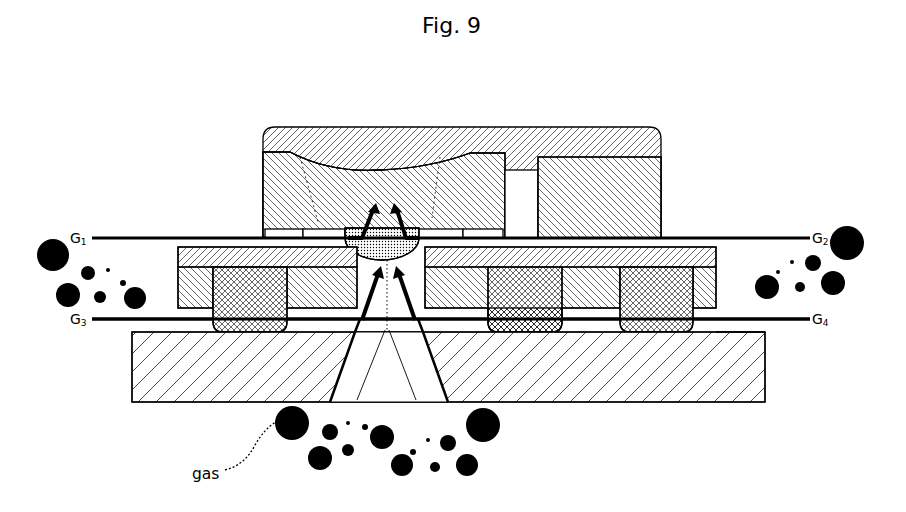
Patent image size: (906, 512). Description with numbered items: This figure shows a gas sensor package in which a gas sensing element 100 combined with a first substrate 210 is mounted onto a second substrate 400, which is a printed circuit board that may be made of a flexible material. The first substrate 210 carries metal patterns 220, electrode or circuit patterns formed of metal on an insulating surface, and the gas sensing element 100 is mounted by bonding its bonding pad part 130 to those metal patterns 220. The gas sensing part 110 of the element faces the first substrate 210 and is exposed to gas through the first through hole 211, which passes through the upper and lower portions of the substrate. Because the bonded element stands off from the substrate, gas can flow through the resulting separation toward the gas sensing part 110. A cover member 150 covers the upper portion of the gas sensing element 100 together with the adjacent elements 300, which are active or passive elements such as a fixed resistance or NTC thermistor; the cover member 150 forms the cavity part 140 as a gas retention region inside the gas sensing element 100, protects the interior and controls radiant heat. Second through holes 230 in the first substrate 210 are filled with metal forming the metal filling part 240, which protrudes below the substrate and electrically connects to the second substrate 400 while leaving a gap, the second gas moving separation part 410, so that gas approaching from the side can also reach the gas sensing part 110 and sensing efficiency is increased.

The gas sensing element 100 is at (462, 163).
The gas sensing part 110 is at (356, 300).
The bonding pad part 130 is at (263, 229).
The cavity part 140 is at (322, 172).
The cover member 150 is at (553, 128).
The first substrate 210 is at (706, 287).
The first through hole 211 is at (418, 380).
The metal patterns 220 is at (178, 252).
The second through holes 230 is at (698, 283).
The metal filling part 240 is at (686, 323).
The adjacent elements 300 is at (663, 181).
The second substrate 400 is at (753, 369).
The second gas moving separation part 410 is at (766, 322).